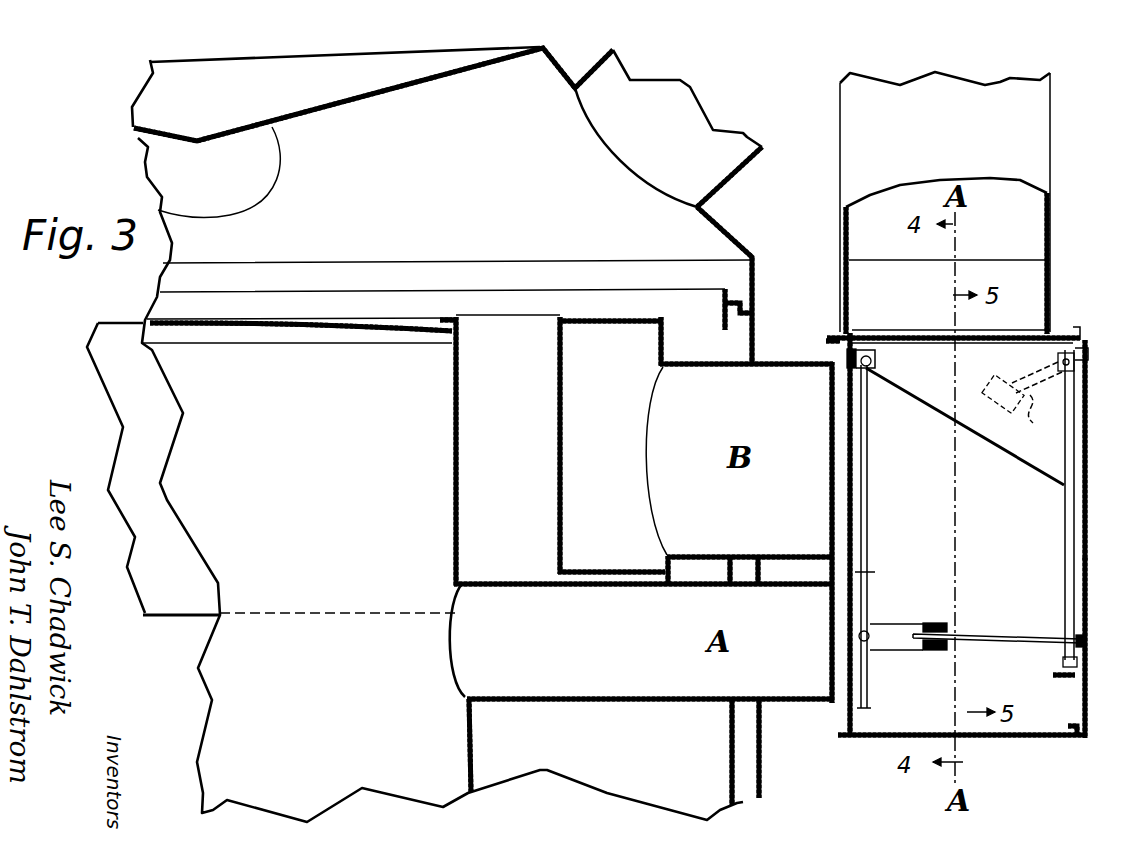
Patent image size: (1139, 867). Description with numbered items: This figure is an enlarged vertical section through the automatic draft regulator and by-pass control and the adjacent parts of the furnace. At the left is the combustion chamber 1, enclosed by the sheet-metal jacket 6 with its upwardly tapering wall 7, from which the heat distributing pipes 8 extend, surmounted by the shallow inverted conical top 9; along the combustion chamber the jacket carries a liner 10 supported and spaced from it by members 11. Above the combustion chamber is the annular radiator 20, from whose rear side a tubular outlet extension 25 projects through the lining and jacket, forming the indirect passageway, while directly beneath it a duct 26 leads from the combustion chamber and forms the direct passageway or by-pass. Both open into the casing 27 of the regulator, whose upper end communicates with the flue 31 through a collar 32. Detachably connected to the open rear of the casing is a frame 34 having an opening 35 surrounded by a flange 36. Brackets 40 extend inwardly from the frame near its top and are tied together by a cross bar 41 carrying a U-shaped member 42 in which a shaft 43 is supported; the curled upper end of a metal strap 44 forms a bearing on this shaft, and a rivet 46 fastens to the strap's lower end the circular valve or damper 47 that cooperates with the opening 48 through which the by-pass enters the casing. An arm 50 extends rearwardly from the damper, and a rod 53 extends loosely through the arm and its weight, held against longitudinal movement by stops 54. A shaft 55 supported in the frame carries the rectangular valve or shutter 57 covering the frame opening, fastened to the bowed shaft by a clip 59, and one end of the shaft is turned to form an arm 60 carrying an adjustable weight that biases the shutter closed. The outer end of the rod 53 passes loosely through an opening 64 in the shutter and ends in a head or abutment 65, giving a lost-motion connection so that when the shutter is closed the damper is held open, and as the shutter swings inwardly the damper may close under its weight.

The combustion chamber 1 is at (453, 488).
The jacket 6 is at (763, 778).
The upwardly tapering wall 7 is at (730, 233).
The heat distributing pipes 8 is at (723, 165).
The inverted conical top 9 is at (337, 100).
The liner 10 is at (733, 767).
The members 11 is at (743, 302).
The annular radiator 20 is at (603, 332).
The tubular outlet extension 25 is at (780, 372).
The duct 26 is at (640, 690).
The casing 27 is at (1042, 723).
The flue 31 is at (953, 230).
The collar 32 is at (1035, 268).
The frame 34 is at (1090, 703).
The opening 35 is at (1087, 585).
The flange 36 is at (1083, 407).
The brackets 40 is at (935, 405).
The cross bar 41 is at (850, 360).
The U-shaped member 42 is at (873, 353).
The shaft 43 is at (867, 365).
The metal strap 44 is at (870, 500).
The rivet 46 is at (870, 633).
The valve or damper 47 is at (863, 590).
The opening 48 is at (870, 568).
The arm 50 is at (893, 643).
The rod 53 is at (1028, 627).
The stops 54 is at (943, 653).
The shaft 55 is at (1060, 363).
The valve or shutter 57 is at (1073, 537).
The clip 59 is at (1093, 342).
The arm 60 is at (1027, 418).
The opening 64 is at (1073, 638).
The head or abutment 65 is at (1084, 641).